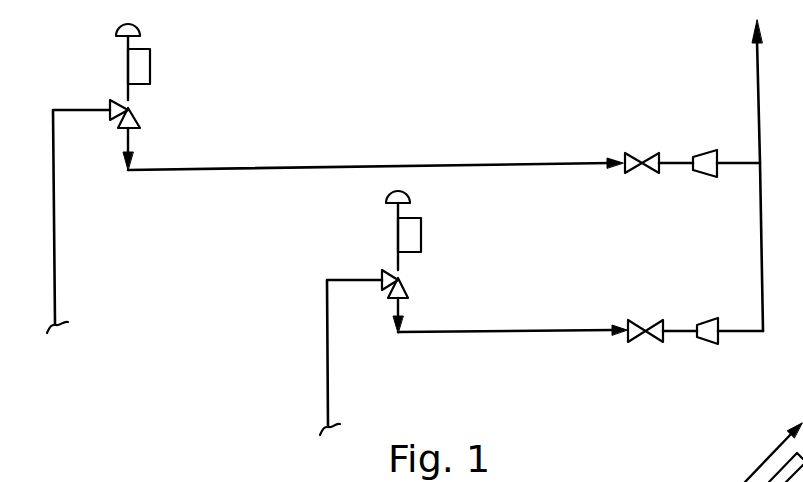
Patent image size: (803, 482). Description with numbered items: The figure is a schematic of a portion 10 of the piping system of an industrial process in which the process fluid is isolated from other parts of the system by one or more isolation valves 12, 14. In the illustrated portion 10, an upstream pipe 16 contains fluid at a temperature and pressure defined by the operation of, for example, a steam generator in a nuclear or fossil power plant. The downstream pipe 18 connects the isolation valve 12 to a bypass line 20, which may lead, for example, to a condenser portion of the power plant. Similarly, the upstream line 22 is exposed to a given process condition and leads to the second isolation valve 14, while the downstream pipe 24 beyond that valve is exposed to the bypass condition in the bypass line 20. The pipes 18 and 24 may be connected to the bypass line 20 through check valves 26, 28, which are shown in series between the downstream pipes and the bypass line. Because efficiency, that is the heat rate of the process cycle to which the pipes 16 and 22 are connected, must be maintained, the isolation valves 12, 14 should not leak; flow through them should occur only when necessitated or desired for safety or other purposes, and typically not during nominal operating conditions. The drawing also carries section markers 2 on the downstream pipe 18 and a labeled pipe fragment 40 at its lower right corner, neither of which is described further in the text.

The portion of an industrial process 10 is at (475, 70).
The isolation valve 12 is at (150, 62).
The isolation valve 14 is at (421, 236).
The upstream pipe 16 is at (54, 217).
The downstream pipe 18 is at (405, 168).
The bypass line 20 is at (757, 93).
The upstream line 22 is at (351, 357).
The downstream pipe 24 is at (492, 331).
The check valve 26 is at (642, 153).
The check valve 28 is at (645, 320).
The pipe section 40 is at (766, 456).
The section line 2- 2 is at (268, 202).